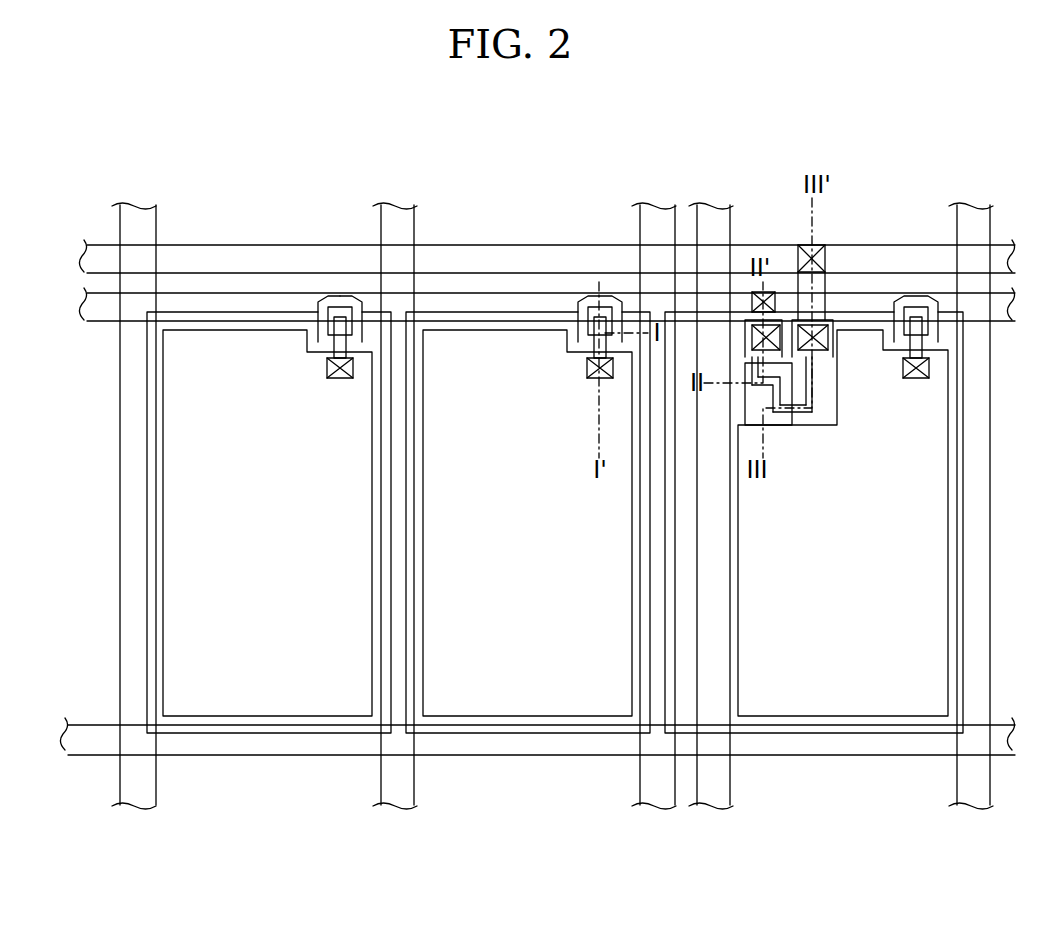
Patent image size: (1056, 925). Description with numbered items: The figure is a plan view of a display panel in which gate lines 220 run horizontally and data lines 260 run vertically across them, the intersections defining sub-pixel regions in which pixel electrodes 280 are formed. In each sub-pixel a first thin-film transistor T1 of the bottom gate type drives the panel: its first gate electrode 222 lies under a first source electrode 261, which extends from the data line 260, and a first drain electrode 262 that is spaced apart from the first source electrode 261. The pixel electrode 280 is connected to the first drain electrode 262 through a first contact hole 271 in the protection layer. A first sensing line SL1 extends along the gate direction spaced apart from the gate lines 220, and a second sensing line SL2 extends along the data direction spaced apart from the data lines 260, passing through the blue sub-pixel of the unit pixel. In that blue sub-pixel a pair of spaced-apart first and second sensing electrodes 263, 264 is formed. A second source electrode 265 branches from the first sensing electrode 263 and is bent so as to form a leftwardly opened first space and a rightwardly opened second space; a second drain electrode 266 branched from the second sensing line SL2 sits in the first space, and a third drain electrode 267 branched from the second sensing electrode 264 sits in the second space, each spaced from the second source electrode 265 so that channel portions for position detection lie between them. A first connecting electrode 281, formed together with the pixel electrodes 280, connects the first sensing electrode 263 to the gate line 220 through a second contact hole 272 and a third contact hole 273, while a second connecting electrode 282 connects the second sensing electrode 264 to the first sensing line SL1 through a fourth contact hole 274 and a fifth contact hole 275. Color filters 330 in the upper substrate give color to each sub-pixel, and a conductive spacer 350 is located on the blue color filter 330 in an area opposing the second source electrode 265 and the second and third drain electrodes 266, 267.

The first sensing line SL1 is at (90, 255).
The second sensing line SL2 is at (722, 808).
The gate line 220 is at (90, 313).
The first gate electrode 222 is at (346, 315).
The data line 260 is at (142, 203).
The first source electrode 261 is at (325, 300).
The first drain electrode 262 is at (360, 300).
The first sensing electrode 263 is at (750, 302).
The second sensing electrode 264 is at (840, 357).
The second source electrode 265 is at (776, 425).
The second drain electrode 266 is at (742, 387).
The third drain electrode 267 is at (813, 408).
The first contact hole 271 is at (326, 368).
The second contact hole 272 is at (745, 330).
The third contact hole 273 is at (773, 297).
The fourth contact hole 274 is at (843, 320).
The fifth contact hole 275 is at (833, 330).
The pixel electrode 280 is at (160, 502).
The first connecting electrode 281 is at (745, 340).
The second connecting electrode 282 is at (803, 283).
The color filter 330 is at (147, 567).
The conductive spacer 350 is at (802, 423).
The first thin-film transistor T1 is at (285, 148).